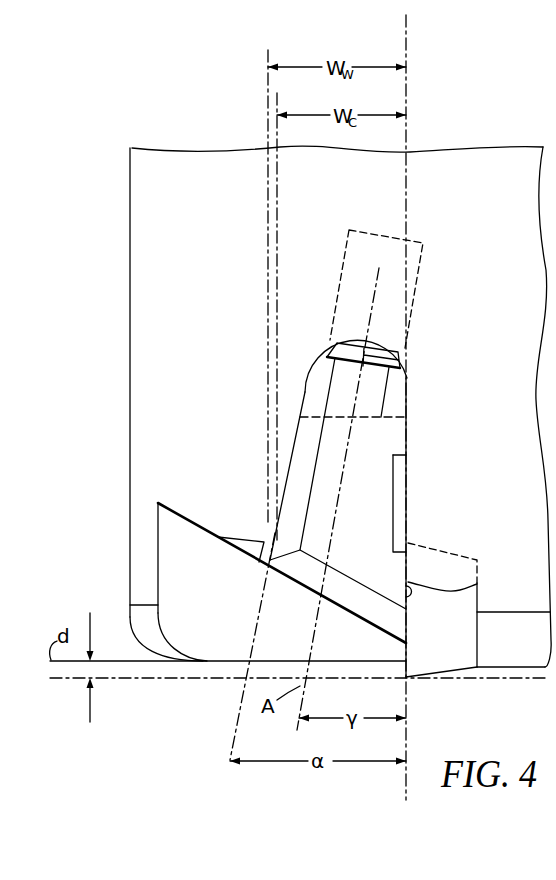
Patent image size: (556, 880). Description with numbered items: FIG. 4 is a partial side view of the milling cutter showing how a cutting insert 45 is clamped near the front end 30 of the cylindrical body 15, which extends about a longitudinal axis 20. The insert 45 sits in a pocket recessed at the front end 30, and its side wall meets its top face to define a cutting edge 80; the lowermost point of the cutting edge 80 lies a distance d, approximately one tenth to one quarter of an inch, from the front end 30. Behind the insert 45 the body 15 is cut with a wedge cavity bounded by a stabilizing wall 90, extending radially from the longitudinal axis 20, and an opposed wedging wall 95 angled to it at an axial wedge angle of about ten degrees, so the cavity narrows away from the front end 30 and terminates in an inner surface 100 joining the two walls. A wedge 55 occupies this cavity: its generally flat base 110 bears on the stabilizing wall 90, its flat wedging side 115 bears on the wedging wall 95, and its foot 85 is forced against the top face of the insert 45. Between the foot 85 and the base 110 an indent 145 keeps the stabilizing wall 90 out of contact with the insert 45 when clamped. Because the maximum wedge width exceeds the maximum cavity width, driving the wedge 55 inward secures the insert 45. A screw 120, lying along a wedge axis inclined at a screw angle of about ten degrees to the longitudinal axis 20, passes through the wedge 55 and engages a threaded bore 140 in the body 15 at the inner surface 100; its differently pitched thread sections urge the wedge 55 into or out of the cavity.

The cylindrical body 15 is at (130, 284).
The longitudinal axis 20 is at (407, 63).
The front end 30 is at (206, 665).
The cutting insert 45 is at (458, 647).
The wedge 55 is at (322, 483).
The cutting edge 80 is at (408, 680).
The foot 85 is at (403, 591).
The stabilizing wall 90 is at (405, 506).
The wedging wall 95 is at (303, 442).
The inner surface 100 is at (315, 377).
The base 110 is at (407, 420).
The wedging side 115 is at (261, 538).
The screw 120 is at (327, 393).
The threaded bore 140 is at (420, 266).
The indent 145 is at (402, 471).